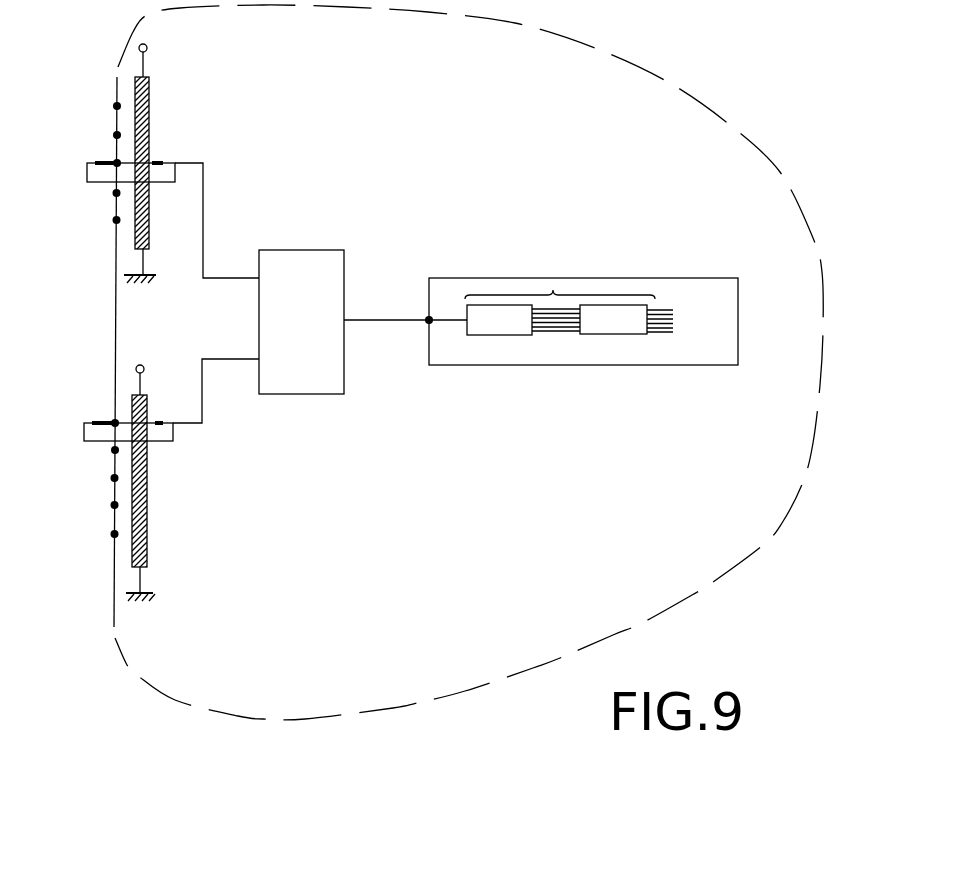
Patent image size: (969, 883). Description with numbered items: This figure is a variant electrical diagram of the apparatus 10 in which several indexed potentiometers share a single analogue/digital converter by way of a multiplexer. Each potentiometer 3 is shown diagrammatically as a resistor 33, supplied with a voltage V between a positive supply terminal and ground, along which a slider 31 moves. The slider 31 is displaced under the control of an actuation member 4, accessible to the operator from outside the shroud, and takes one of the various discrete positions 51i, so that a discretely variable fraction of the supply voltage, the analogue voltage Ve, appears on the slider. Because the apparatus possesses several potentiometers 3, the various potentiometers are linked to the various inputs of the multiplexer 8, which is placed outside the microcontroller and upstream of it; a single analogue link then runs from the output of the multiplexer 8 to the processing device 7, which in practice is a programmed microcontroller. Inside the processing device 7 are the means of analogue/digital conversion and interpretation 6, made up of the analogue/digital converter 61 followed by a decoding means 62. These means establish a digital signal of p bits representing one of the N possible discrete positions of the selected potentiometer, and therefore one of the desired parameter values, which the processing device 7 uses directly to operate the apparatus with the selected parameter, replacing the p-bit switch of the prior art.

The apparatus 10 is at (692, 595).
The actuation member 4 is at (105, 162).
The discrete positions 51i is at (114, 534).
The potentiometer 3 is at (171, 313).
The resistor 33 is at (150, 102).
The slider 31 is at (160, 162).
The multiplexer 8 is at (309, 333).
The processing device 7 is at (653, 352).
The means of analogue/digital conversion and interpretation 6 is at (569, 328).
The analogue/digital converter 61 is at (497, 327).
The decoding means 62 is at (610, 323).